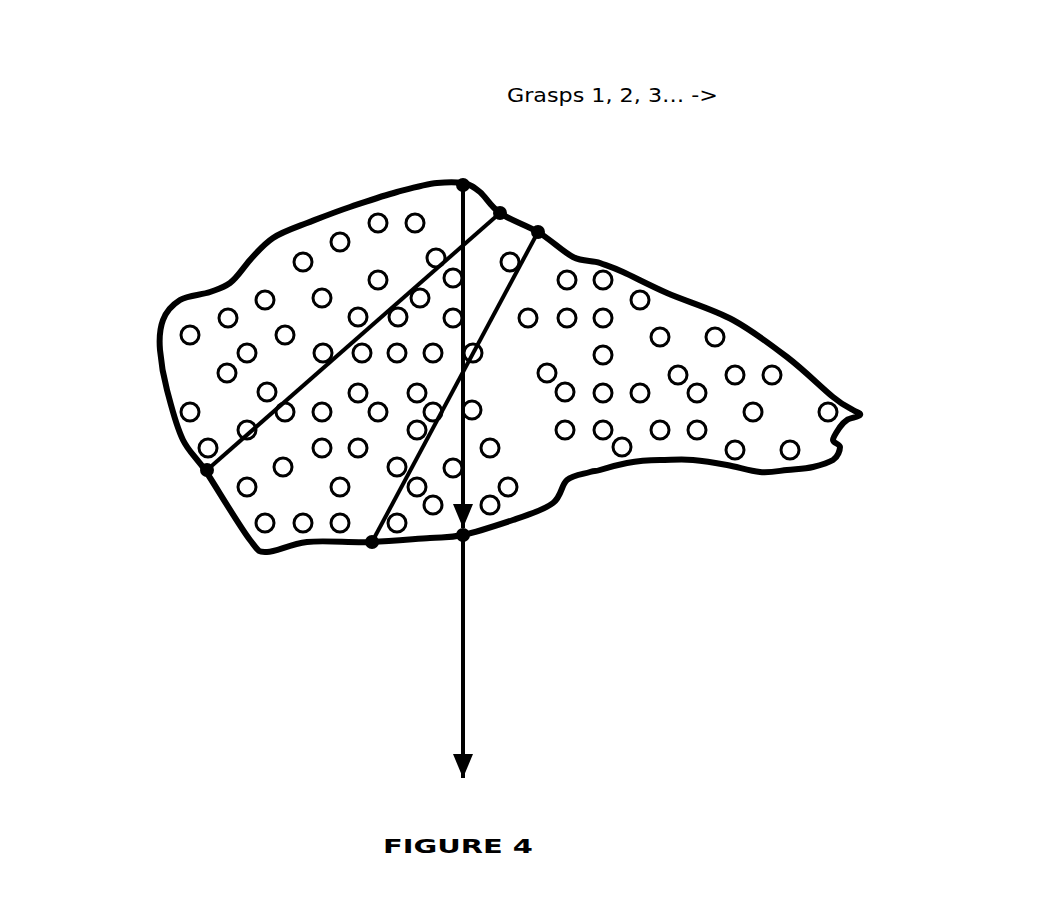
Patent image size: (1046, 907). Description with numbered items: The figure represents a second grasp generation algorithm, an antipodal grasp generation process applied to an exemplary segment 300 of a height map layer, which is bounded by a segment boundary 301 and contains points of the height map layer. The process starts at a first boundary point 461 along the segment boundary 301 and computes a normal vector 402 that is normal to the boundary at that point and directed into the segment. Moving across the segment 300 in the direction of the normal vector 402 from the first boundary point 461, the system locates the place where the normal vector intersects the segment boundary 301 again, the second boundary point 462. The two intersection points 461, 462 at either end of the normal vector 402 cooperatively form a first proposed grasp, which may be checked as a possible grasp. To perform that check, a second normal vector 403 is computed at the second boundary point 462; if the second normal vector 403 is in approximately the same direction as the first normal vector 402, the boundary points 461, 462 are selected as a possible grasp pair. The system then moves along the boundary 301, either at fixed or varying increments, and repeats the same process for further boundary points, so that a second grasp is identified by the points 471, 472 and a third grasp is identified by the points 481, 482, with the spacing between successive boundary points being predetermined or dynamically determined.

The segment 300 is at (180, 240).
The segment boundary 301 is at (248, 535).
The normal vector 402 is at (452, 212).
The second normal vector 403 is at (468, 703).
The first boundary point 461 is at (457, 178).
The second boundary point 462 is at (470, 548).
The boundary point 471 is at (512, 212).
The boundary point 472 is at (198, 478).
The boundary point 481 is at (547, 222).
The boundary point 482 is at (375, 552).